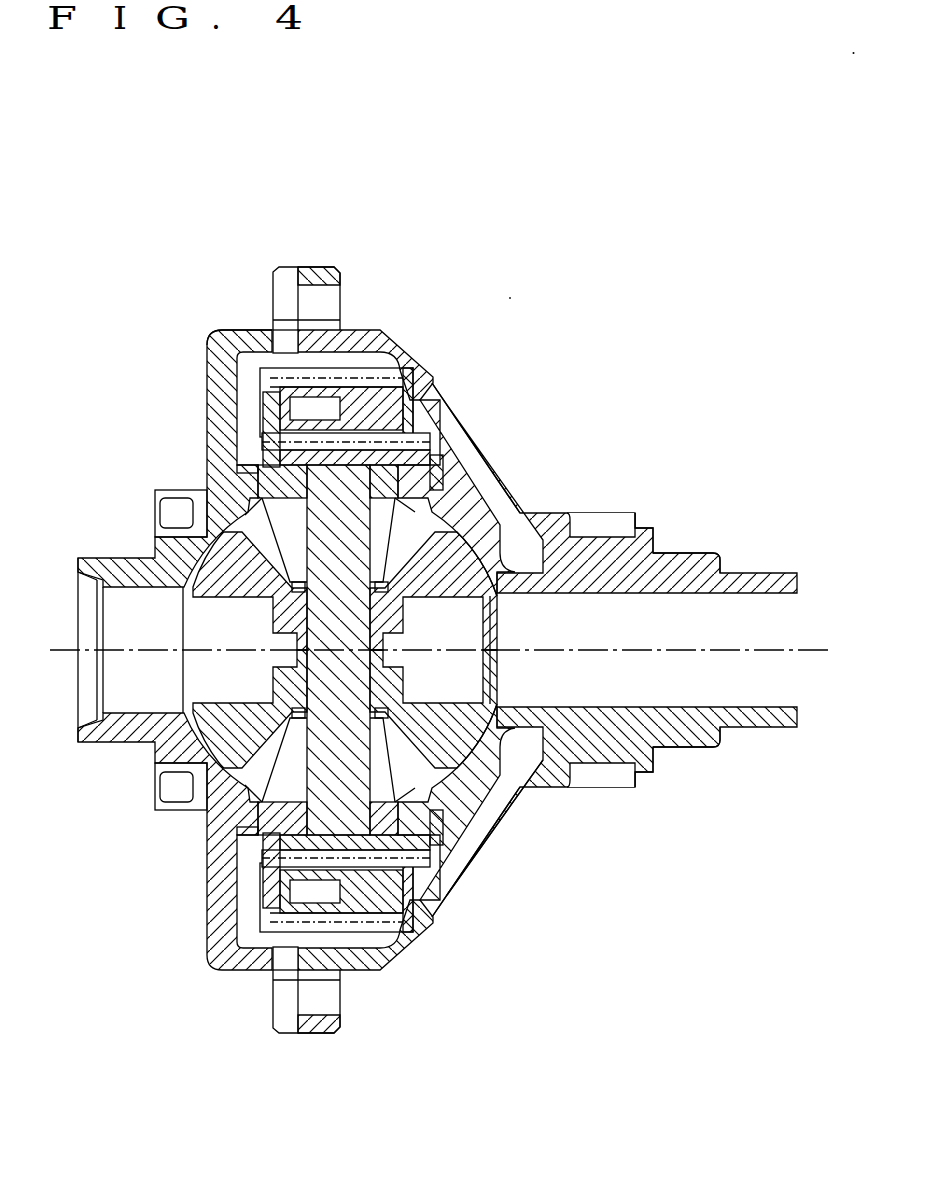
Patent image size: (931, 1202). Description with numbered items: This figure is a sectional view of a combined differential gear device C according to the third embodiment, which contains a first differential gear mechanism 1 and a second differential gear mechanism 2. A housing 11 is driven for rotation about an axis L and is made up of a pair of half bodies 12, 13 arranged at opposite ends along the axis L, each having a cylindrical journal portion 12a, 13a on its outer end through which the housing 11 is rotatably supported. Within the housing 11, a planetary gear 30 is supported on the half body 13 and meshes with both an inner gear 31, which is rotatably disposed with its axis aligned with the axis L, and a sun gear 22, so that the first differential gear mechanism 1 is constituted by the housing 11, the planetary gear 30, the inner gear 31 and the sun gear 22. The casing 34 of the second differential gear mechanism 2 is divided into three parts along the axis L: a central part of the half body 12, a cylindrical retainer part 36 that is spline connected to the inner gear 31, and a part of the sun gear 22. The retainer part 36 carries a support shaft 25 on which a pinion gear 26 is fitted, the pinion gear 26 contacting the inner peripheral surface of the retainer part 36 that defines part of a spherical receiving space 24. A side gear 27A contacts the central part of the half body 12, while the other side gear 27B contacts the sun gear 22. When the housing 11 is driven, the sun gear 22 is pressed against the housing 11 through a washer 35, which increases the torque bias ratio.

The first differential gear mechanism 1 is at (358, 342).
The second differential gear mechanism 2 is at (300, 835).
The housing 11 is at (474, 431).
The half body 12 is at (207, 387).
The journal portion 12a is at (112, 557).
The half body 13 is at (440, 425).
The journal portion 13a is at (693, 553).
The sun gear 22 is at (480, 530).
The receiving space 24 is at (520, 560).
The support shaft 25 is at (440, 840).
The pinion gear 26 is at (262, 508).
The side gear 27A is at (213, 723).
The side gear 27B is at (510, 763).
The planetary gear 30 is at (398, 372).
The inner gear 31 is at (275, 333).
The casing 34 is at (478, 790).
The washer 35 is at (443, 460).
The retainer part 36 is at (235, 478).
The combined differential gear device C is at (512, 290).
The axis L is at (820, 642).